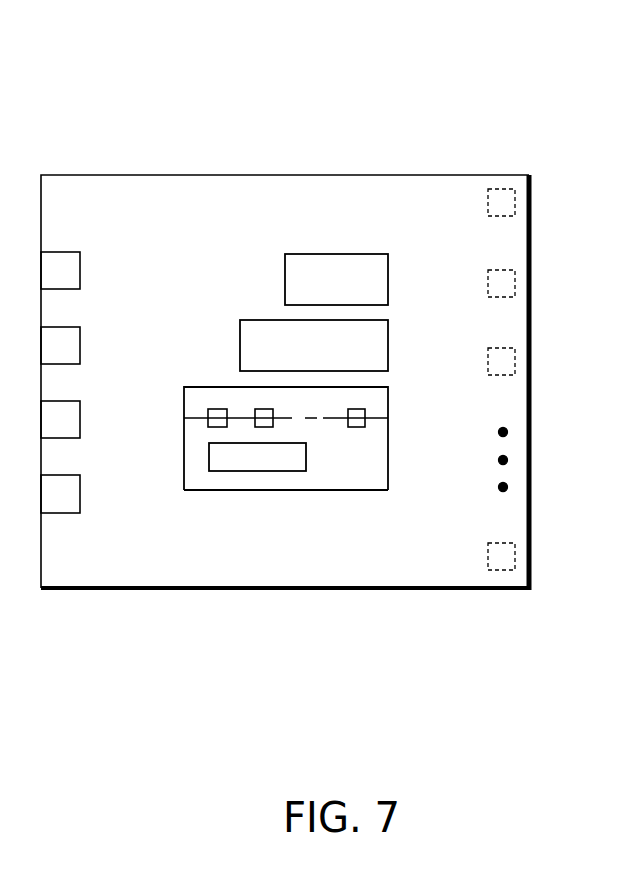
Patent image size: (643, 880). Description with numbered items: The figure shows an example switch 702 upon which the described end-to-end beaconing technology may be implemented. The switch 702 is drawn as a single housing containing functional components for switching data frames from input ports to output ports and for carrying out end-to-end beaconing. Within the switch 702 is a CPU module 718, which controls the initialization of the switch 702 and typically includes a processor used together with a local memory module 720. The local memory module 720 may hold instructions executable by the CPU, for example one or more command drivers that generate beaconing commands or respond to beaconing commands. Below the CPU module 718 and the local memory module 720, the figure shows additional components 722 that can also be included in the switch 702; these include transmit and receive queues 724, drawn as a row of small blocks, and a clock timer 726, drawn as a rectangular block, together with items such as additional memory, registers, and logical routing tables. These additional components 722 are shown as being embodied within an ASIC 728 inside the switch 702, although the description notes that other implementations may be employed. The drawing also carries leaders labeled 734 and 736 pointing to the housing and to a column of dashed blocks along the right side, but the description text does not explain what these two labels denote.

The switch 702 is at (513, 175).
The CPU module 718 is at (388, 280).
The local memory module 720 is at (388, 357).
The additional components 722 is at (302, 525).
The transmit and receive queues 724 is at (369, 435).
The clock timer 726 is at (288, 471).
The ASIC 728 is at (222, 490).
The housing 734 is at (100, 212).
The indicator panel 736 is at (470, 187).